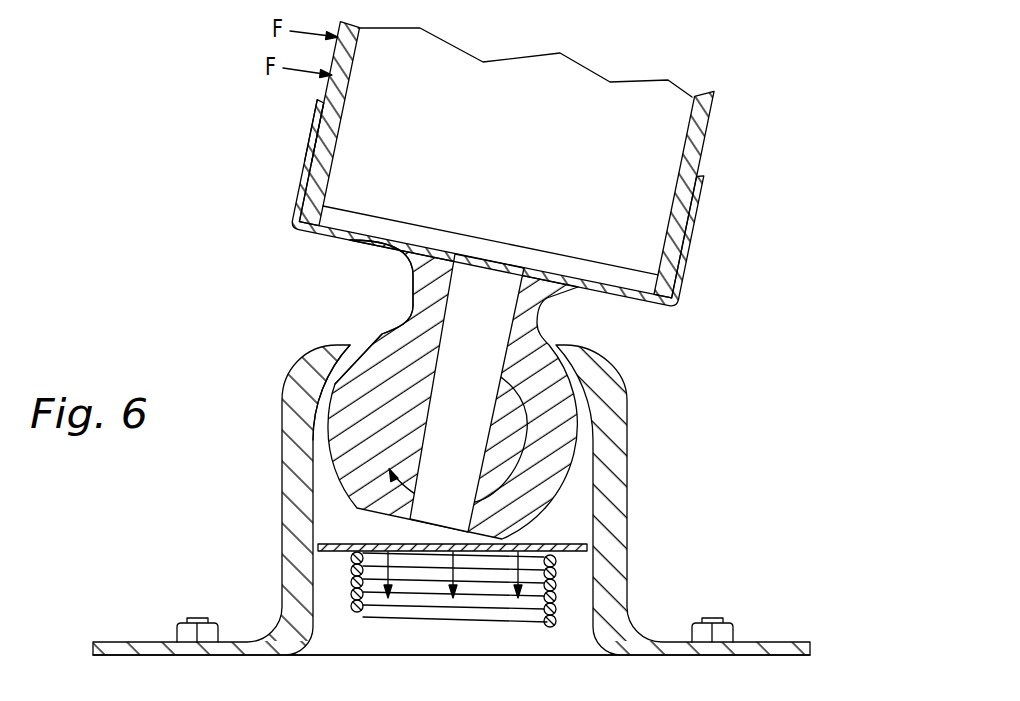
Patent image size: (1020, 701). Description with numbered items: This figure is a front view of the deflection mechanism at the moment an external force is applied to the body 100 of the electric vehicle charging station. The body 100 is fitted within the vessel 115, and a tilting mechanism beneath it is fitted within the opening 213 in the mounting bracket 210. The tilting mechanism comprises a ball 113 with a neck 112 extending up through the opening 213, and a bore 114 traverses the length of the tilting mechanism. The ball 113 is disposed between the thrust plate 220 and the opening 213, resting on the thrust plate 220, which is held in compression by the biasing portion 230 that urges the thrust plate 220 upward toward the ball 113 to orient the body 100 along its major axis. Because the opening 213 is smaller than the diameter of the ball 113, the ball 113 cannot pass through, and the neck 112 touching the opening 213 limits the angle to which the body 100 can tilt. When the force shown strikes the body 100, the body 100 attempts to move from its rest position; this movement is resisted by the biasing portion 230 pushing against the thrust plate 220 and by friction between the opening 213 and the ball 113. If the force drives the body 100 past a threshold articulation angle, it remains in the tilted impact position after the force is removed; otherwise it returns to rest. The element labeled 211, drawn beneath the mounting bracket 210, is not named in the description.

The body 100 is at (703, 140).
The neck 112 is at (410, 292).
The ball 113 is at (540, 487).
The bore 114 is at (480, 313).
The vessel 115 is at (308, 165).
The mounting bracket 210 is at (627, 410).
The base flange 211 is at (766, 640).
The opening 213 is at (367, 340).
The thrust plate 220 is at (337, 543).
The biasing portion 230 is at (557, 580).